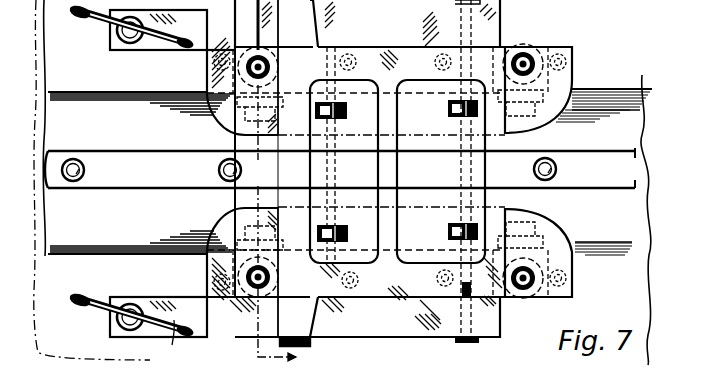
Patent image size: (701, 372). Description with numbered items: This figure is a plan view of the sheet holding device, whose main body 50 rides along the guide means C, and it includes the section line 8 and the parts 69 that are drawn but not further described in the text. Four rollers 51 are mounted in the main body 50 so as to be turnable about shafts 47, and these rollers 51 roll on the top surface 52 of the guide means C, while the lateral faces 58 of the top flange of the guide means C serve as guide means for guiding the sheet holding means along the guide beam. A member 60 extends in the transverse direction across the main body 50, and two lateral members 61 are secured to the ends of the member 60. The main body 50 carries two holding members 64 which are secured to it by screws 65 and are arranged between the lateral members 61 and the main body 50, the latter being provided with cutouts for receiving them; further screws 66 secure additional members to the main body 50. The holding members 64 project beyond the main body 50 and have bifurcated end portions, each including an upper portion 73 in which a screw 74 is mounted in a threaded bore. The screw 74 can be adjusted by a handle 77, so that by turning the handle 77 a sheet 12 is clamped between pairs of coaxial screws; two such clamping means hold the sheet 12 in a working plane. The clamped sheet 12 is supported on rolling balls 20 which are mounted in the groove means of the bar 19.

The guide means C is at (69, 106).
The clamping bolt / section arrow 8 is at (390, 186).
The sheet 12 is at (146, 72).
The bar 19 is at (610, 176).
The rolling balls 20 is at (551, 159).
The shafts 47 is at (342, 108).
The main body 50 is at (356, 186).
The rollers 51 is at (348, 110).
The top surface 52 is at (614, 118).
The lateral faces 58 is at (642, 87).
The member 60 is at (290, 169).
The lateral members 61 is at (311, 341).
The holding members 64 is at (441, 332).
The screws 65 is at (468, 343).
The screws 66 is at (440, 284).
The nut 69 is at (224, 128).
The upper portion 73 is at (169, 346).
The screw 74 is at (128, 50).
The handle 77 is at (90, 22).